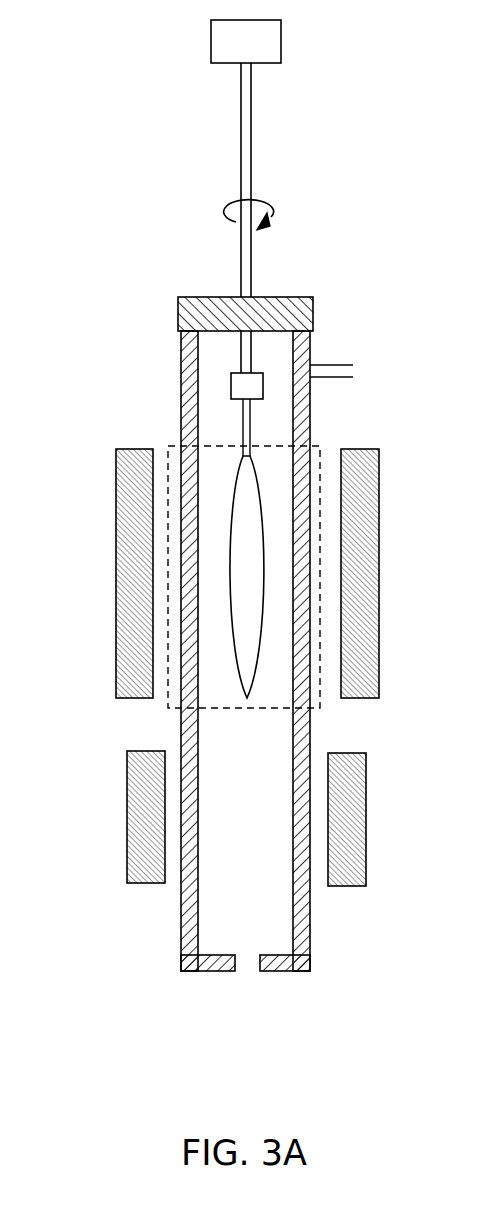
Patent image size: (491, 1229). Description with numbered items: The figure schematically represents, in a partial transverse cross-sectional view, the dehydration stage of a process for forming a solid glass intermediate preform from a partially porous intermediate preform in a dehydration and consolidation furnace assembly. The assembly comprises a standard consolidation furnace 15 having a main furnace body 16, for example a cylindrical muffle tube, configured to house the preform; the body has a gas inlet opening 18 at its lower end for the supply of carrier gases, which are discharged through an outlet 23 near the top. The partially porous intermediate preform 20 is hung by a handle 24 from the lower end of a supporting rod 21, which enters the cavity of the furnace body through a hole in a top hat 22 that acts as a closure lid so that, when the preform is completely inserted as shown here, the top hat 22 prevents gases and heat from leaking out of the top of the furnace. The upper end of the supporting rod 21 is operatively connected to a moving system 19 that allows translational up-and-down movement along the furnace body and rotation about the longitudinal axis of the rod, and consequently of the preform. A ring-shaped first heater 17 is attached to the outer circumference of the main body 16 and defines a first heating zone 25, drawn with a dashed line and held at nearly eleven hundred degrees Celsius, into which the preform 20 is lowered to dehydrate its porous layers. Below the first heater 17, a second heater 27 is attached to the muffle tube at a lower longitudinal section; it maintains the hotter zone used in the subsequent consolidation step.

The consolidation furnace 15 is at (156, 355).
The main furnace body 16 is at (181, 730).
The first heater 17 is at (116, 520).
The gas inlet opening 18 is at (247, 968).
The moving system 19 is at (270, 46).
The partially porous intermediate preform 20 is at (235, 483).
The supporting rod 21 is at (246, 138).
The top hat 22 is at (178, 300).
The outlet 23 is at (340, 365).
The handle 24 is at (262, 386).
The first heating zone 25 is at (318, 683).
The second heater 27 is at (366, 811).